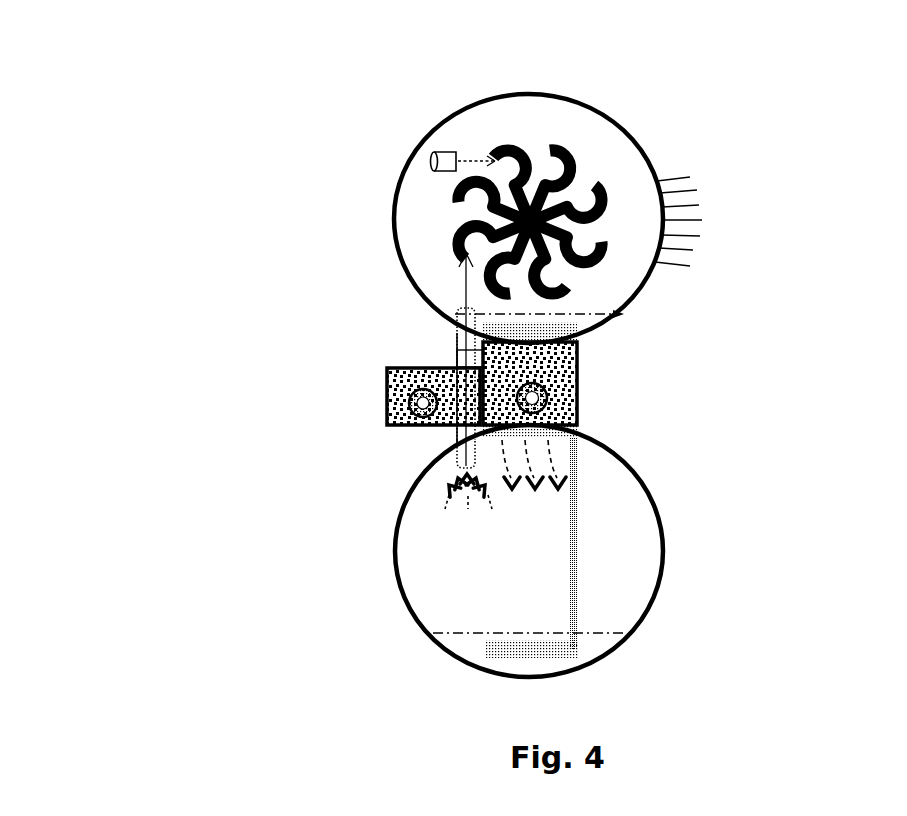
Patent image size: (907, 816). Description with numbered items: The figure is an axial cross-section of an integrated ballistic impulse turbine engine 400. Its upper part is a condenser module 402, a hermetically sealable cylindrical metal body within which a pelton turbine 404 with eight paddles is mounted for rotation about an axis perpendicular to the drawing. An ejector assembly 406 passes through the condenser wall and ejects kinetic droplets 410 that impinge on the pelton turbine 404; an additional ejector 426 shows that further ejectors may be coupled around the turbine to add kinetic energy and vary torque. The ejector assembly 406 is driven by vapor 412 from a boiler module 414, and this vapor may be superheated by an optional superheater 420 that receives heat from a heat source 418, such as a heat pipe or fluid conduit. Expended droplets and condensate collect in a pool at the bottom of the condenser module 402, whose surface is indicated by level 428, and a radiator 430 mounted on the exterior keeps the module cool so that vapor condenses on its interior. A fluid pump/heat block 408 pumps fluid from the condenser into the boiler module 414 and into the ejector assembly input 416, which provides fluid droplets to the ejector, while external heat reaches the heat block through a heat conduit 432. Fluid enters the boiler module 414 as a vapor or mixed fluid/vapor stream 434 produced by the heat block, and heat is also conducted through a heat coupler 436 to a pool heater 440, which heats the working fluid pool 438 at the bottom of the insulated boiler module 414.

The integrated ballistic impulse turbine engine 400 is at (272, 108).
The condenser module 402 is at (456, 97).
The pelton turbine 404 is at (595, 157).
The ejector assembly 406 is at (457, 340).
The fluid pump/heat block 408 is at (577, 378).
The kinetic droplets 410 is at (462, 278).
The vapor 412 is at (445, 498).
The boiler module 414 is at (396, 571).
The ejector assembly input 416 is at (455, 453).
The heat source 418 is at (388, 403).
The superheater 420 is at (388, 386).
The ejector 426 is at (430, 158).
The level 428 is at (628, 313).
The radiator 430 is at (716, 228).
The heat conduit 432 is at (548, 398).
The vapor or mixed fluid/vapor stream 434 is at (552, 458).
The heat coupler 436 is at (598, 547).
The working fluid pool 438 is at (447, 640).
The pool heater 440 is at (577, 650).